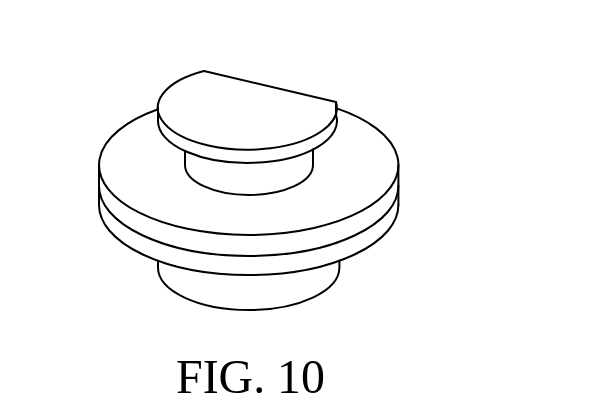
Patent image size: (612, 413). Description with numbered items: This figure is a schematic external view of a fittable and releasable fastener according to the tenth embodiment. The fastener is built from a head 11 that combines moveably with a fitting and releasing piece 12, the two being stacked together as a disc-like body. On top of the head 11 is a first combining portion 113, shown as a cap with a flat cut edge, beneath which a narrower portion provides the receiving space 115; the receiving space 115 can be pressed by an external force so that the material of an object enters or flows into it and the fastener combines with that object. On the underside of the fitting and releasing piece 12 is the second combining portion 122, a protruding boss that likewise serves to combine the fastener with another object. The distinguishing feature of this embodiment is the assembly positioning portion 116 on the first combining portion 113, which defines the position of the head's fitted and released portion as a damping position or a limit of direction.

The head 11 is at (378, 209).
The fitting and releasing piece 12 is at (377, 233).
The second combining portion 122 is at (298, 277).
The receiving space 115 is at (285, 176).
The assembly positioning portion 116 is at (303, 148).
The first combining portion 113 is at (243, 90).